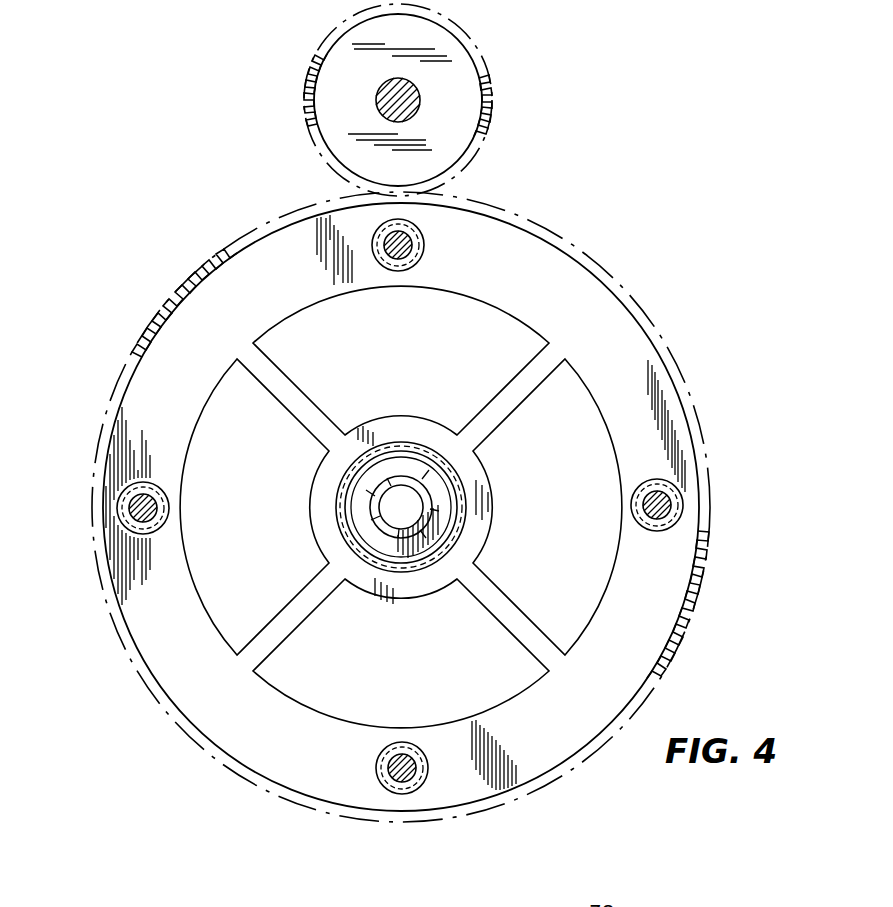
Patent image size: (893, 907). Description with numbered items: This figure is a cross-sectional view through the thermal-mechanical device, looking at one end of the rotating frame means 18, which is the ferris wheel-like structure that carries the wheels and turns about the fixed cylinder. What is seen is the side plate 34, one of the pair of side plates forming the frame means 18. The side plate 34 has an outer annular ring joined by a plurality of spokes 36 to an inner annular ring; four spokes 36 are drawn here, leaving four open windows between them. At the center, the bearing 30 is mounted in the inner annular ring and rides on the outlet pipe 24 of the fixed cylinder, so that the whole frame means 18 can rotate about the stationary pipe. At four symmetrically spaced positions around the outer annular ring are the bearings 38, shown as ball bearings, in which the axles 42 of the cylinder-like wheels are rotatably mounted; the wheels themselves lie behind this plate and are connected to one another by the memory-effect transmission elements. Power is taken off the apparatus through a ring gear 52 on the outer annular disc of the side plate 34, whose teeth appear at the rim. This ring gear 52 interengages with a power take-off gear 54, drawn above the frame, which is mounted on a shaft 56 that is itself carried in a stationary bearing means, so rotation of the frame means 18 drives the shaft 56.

The frame means 18 is at (537, 266).
The outlet pipe 24 is at (425, 493).
The bearing 30 is at (463, 518).
The side plate 34 is at (582, 293).
The spokes 36 is at (507, 399).
The bearings 38 is at (419, 233).
The axles 42 is at (408, 248).
The ring gear 52 is at (205, 250).
The power take-off gear 54 is at (495, 133).
The shaft 56 is at (416, 100).